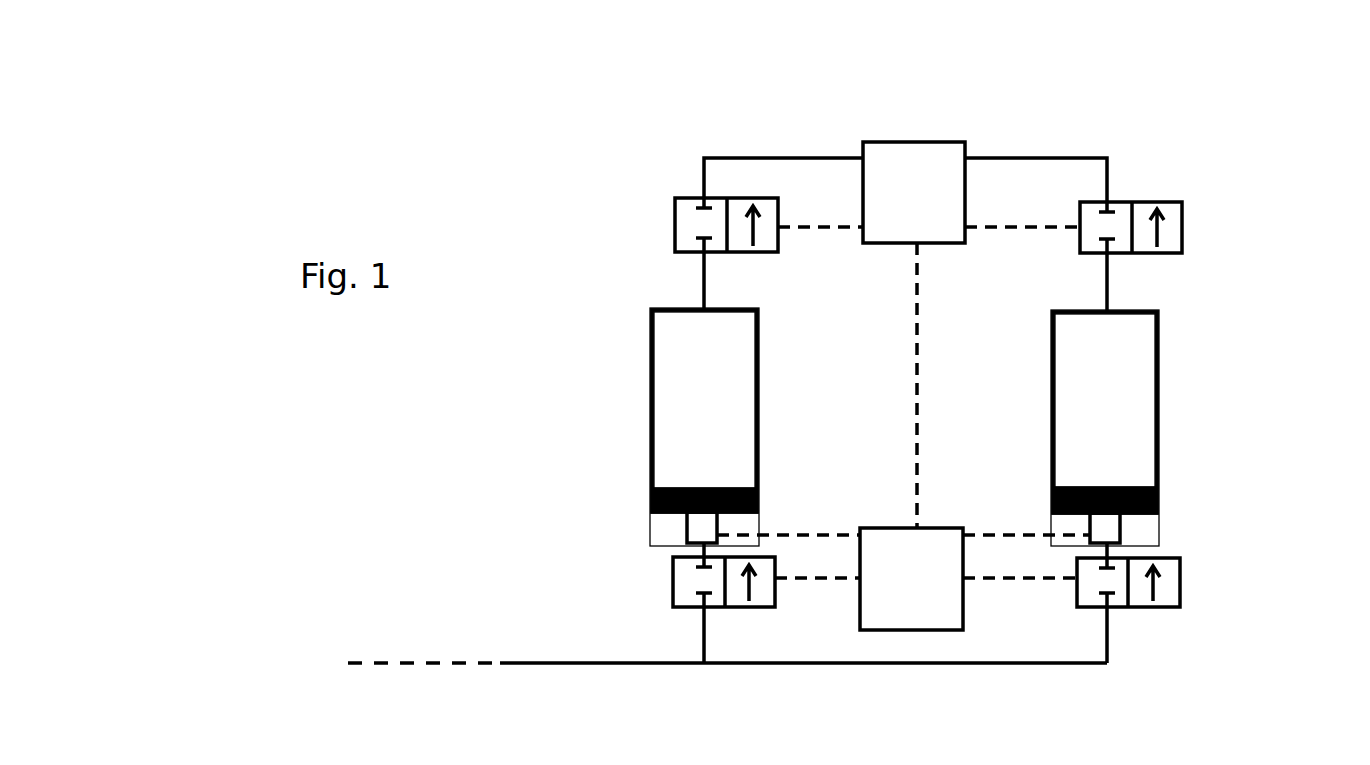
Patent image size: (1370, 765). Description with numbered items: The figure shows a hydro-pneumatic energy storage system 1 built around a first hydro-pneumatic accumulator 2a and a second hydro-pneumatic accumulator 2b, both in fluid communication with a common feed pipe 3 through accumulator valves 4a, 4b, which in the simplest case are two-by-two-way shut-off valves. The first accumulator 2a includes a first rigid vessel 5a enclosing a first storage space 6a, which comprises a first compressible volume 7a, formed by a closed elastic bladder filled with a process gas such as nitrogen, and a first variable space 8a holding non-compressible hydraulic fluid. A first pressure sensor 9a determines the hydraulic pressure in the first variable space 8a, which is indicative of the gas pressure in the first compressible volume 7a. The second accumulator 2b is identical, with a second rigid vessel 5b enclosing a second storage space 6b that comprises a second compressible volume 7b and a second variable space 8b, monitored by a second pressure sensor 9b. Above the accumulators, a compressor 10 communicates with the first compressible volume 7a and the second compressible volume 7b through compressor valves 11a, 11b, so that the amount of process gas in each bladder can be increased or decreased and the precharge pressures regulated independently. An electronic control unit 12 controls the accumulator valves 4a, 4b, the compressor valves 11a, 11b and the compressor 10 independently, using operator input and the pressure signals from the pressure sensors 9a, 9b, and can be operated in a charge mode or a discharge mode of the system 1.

The hydro-pneumatic energy storage system 1 is at (622, 154).
The first hydro-pneumatic accumulator 2a is at (609, 464).
The second hydro-pneumatic accumulator 2b is at (1175, 474).
The common feed pipe 3 is at (613, 665).
The first accumulator valve 4a is at (673, 578).
The second accumulator valve 4b is at (1180, 582).
The first rigid vessel 5a is at (652, 342).
The second rigid vessel 5b is at (1157, 352).
The first storage space 6a is at (692, 437).
The second storage space 6b is at (1119, 452).
The first compressible volume 7a is at (704, 411).
The second compressible volume 7b is at (1105, 412).
The first variable space 8a is at (655, 513).
The second variable space 8b is at (1157, 513).
The first pressure sensor 9a is at (717, 525).
The second pressure sensor 9b is at (1088, 523).
The compressor 10 is at (914, 192).
The first compressor valve 11a is at (675, 226).
The second compressor valve 11b is at (1188, 227).
The electronic control unit 12 is at (911, 579).